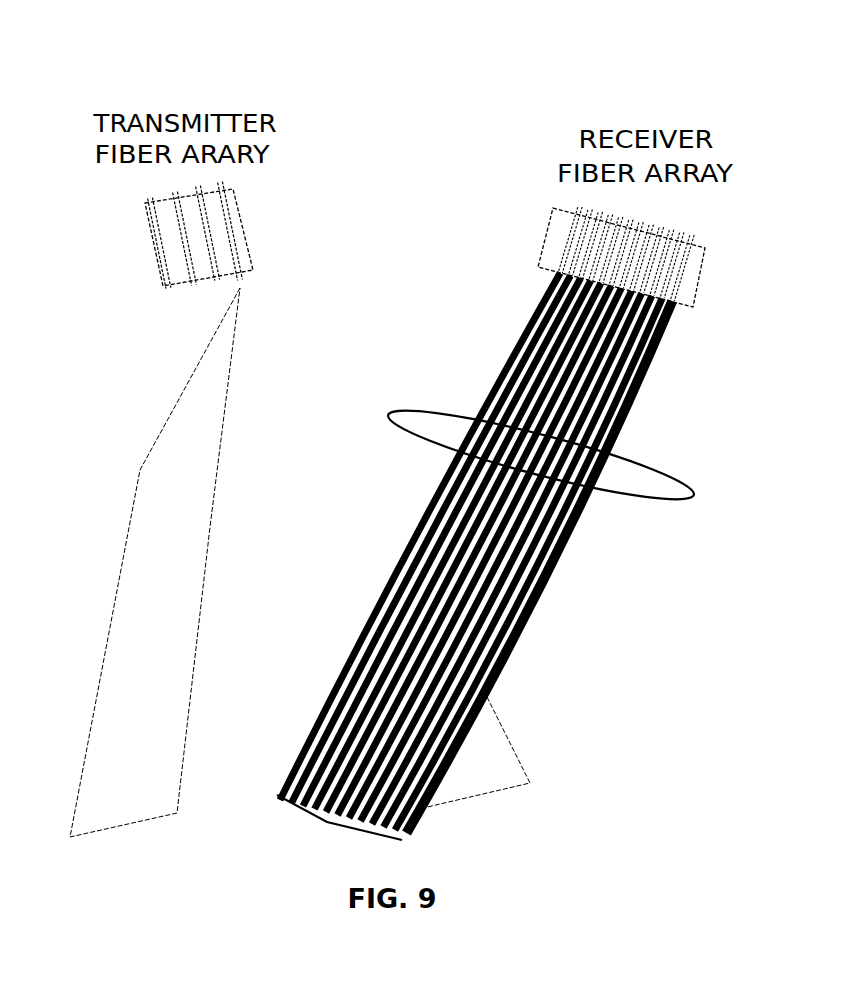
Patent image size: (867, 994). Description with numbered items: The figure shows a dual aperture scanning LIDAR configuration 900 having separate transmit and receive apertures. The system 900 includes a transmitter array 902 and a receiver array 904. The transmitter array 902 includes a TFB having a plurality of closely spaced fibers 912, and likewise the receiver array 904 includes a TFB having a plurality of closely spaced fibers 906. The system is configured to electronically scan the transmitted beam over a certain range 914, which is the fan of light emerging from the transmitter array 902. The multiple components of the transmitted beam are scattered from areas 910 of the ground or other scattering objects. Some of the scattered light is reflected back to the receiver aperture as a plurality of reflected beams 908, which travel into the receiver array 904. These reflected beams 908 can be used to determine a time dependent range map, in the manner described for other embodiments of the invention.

The dual aperture scanning LIDAR configuration 900 is at (796, 102).
The transmitter array 902 is at (243, 219).
The receiver array 904 is at (700, 285).
The receiver fibers 906 is at (573, 202).
The reflected beams 908 is at (688, 482).
The areas 910 is at (328, 822).
The closely spaced fibers 912 is at (223, 177).
The range 914 is at (148, 592).